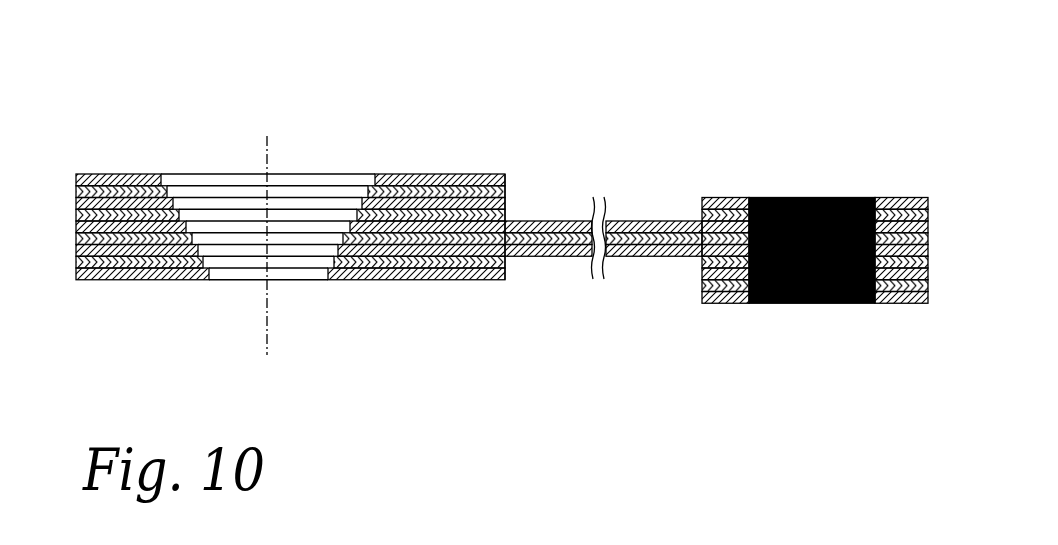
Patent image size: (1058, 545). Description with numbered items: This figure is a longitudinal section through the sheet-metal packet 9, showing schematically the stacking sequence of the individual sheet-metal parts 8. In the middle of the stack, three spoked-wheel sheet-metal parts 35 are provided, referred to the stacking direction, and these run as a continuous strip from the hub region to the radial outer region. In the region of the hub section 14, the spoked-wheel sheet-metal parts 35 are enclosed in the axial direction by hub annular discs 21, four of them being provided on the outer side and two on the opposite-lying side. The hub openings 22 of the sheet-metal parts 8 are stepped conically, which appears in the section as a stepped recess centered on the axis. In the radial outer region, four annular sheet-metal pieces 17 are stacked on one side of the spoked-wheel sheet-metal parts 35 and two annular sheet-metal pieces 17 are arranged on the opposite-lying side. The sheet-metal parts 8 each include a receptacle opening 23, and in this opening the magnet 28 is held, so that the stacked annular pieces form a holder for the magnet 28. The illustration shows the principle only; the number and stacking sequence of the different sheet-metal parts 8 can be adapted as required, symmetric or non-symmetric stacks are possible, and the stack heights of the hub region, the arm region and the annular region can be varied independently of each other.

The sheet-metal parts 8 is at (389, 221).
The sheet-metal packet 9 is at (502, 210).
The hub section 14 is at (511, 208).
The annular sheet-metal pieces 17 is at (917, 215).
The hub annular discs 21 is at (450, 218).
The hub openings 22 is at (296, 222).
The receptacle opening 23 is at (815, 225).
The magnet 28 is at (789, 190).
The spoked-wheel sheet-metal parts 35 is at (573, 252).